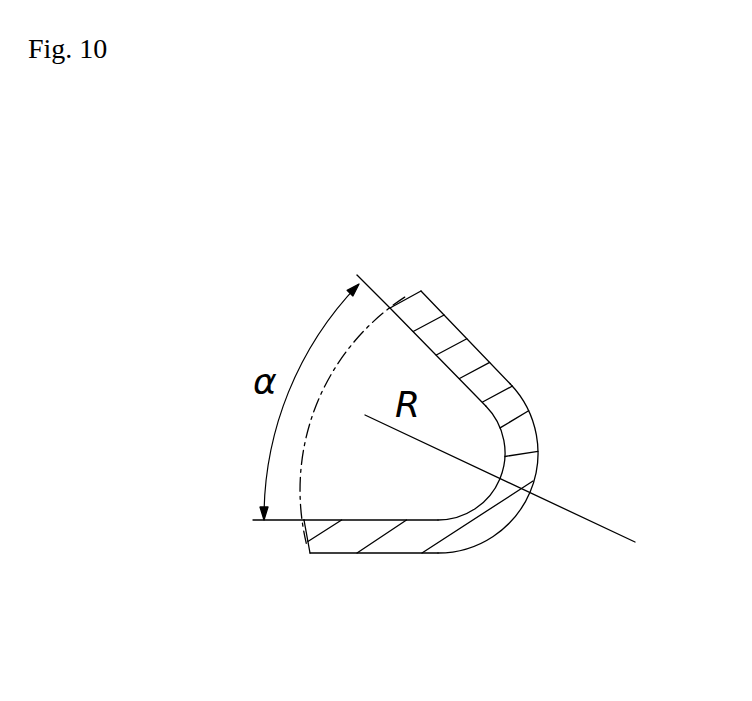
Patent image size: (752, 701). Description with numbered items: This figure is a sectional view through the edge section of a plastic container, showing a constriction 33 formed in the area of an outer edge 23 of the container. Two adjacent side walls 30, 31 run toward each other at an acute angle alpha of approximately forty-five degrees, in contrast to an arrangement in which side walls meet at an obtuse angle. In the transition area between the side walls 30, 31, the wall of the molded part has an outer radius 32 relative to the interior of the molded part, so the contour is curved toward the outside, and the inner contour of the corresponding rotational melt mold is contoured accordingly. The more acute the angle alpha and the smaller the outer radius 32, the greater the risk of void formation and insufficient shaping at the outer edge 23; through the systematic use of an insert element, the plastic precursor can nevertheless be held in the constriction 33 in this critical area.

The side wall 30 is at (458, 352).
The side wall 31 is at (380, 553).
The outer radius 32 is at (462, 509).
The constriction 33 is at (352, 420).
The outer edge 23 is at (517, 527).